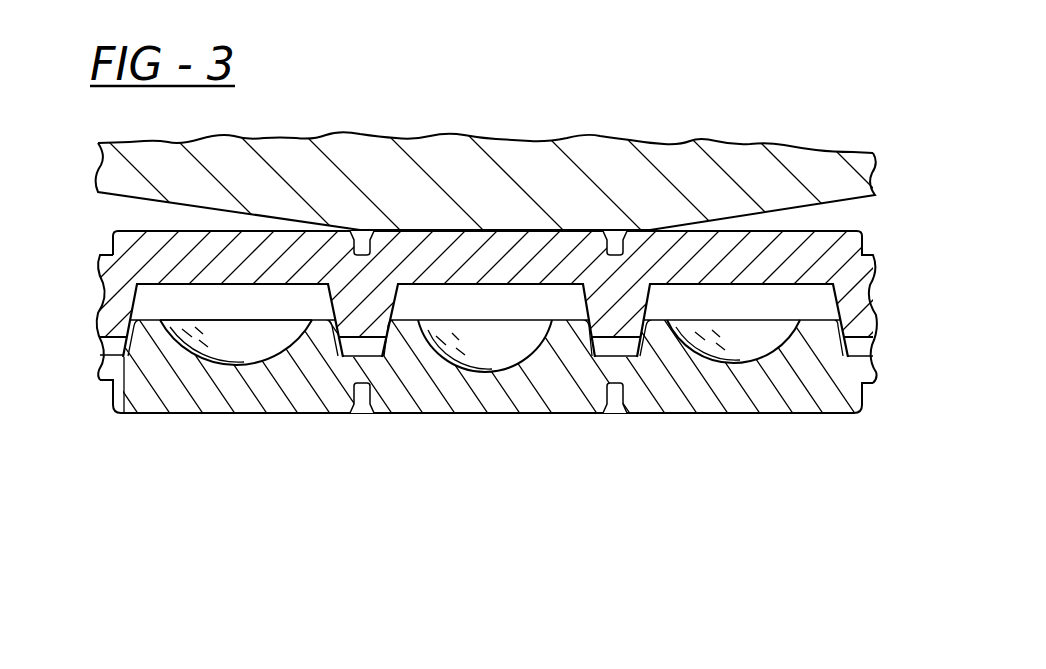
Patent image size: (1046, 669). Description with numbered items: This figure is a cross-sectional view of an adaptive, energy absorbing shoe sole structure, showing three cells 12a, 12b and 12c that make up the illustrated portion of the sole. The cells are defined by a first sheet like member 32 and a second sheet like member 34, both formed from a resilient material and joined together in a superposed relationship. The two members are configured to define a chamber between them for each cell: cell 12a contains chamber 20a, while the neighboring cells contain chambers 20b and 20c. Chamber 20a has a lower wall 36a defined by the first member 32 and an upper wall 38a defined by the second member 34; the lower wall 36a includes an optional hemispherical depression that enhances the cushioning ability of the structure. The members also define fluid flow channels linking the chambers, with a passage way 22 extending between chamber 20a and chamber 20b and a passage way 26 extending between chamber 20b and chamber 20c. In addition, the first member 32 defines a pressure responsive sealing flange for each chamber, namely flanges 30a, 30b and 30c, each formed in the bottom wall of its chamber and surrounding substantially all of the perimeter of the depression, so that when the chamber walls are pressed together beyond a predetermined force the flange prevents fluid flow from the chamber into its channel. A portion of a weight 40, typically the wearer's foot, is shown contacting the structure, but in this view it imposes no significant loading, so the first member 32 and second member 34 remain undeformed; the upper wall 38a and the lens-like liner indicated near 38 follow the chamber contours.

The weight 40 is at (482, 160).
The second sheet like member 34 is at (870, 290).
The first sheet like member 32 is at (835, 405).
The chamber 20a is at (258, 313).
The chamber 20b is at (515, 313).
The chamber 20c is at (774, 313).
The cell 12a is at (203, 413).
The cell 12b is at (492, 413).
The cell 12c is at (727, 413).
The sealing flange 30a is at (125, 412).
The sealing flange 30b is at (565, 322).
The sealing flange 30c is at (818, 322).
The lower wall 36a is at (230, 365).
The passage way 22 is at (357, 348).
The passage way 26 is at (613, 350).
The film 38 is at (370, 392).
The upper wall 38a is at (130, 292).